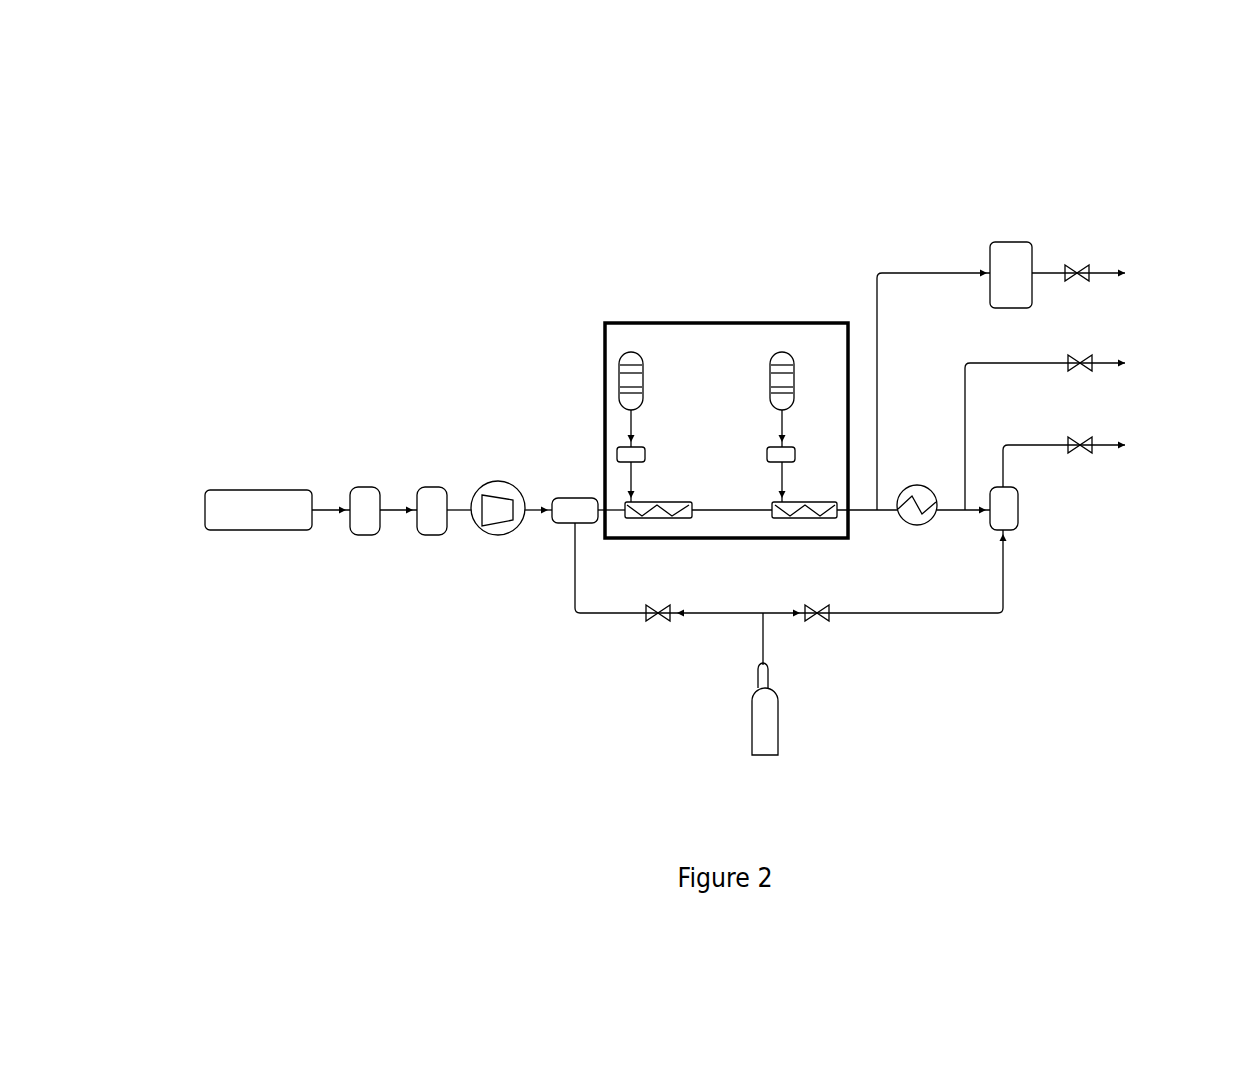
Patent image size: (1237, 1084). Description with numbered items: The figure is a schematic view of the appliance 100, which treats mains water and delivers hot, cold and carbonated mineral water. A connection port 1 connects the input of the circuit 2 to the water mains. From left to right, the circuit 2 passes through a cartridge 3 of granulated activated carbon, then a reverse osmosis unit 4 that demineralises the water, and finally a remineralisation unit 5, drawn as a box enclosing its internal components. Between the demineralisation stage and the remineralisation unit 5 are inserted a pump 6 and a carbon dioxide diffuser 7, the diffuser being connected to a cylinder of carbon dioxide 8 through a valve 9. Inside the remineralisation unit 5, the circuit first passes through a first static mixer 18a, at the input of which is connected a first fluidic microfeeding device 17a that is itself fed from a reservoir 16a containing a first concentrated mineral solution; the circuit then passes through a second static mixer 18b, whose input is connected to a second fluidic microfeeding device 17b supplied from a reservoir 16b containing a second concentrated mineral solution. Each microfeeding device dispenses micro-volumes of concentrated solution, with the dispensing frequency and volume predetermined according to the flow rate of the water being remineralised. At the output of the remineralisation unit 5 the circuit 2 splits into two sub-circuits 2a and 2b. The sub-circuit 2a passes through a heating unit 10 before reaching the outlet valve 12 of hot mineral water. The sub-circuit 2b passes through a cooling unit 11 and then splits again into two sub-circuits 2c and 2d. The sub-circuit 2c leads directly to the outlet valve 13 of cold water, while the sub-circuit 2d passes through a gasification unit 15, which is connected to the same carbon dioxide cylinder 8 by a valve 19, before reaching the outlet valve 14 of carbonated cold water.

The appliance 100 is at (323, 253).
The connection port 1 is at (258, 497).
The circuit 2 is at (325, 511).
The sub-circuit 2a is at (905, 272).
The sub-circuit 2b is at (893, 512).
The sub-circuit 2c is at (1050, 363).
The sub-circuit 2d is at (1005, 453).
The cartridge of granulated activated carbon 3 is at (362, 497).
The reverse osmosis unit 4 is at (428, 497).
The remineralisation unit 5 is at (782, 322).
The pump 6 is at (492, 497).
The carbon dioxide diffuser 7 is at (577, 508).
The cylinder of carbon dioxide 8 is at (762, 705).
The valve 9 is at (650, 616).
The heating unit 10 is at (1015, 257).
The cooling unit 11 is at (915, 515).
The outlet valve of hot mineral water 12 is at (1083, 273).
The outlet valve of cold water 13 is at (1093, 368).
The outlet valve of carbonated cold water 14 is at (1092, 453).
The gasification unit 15 is at (1007, 510).
The reservoir 16a is at (630, 352).
The reservoir 16b is at (777, 377).
The first fluidic microfeeding device 17a is at (625, 447).
The second fluidic microfeeding device 17b is at (775, 445).
The first static mixer 18a is at (670, 502).
The second static mixer 18b is at (820, 502).
The valve 19 is at (820, 618).